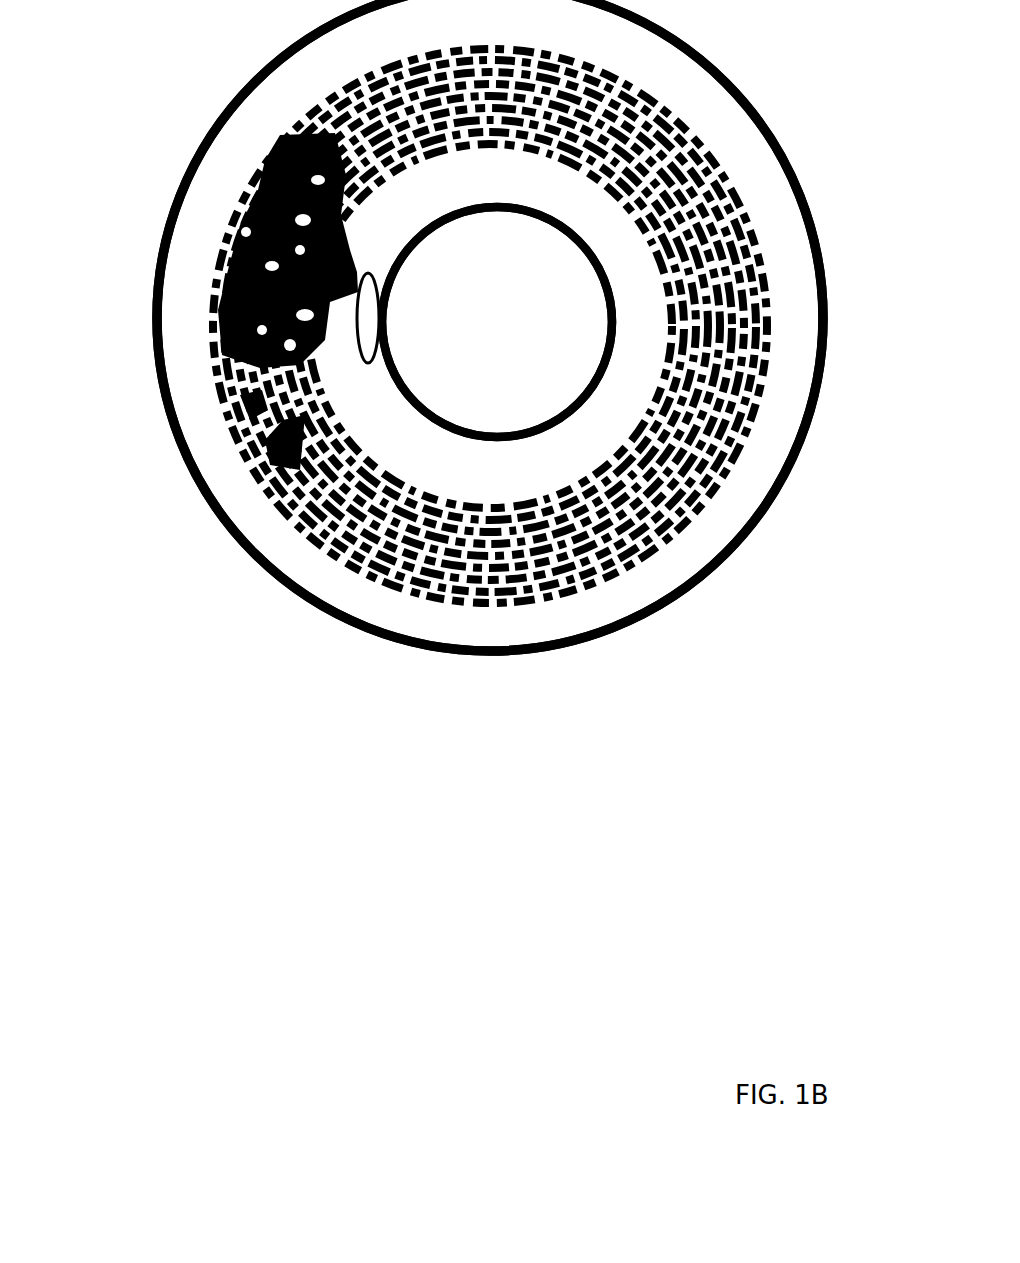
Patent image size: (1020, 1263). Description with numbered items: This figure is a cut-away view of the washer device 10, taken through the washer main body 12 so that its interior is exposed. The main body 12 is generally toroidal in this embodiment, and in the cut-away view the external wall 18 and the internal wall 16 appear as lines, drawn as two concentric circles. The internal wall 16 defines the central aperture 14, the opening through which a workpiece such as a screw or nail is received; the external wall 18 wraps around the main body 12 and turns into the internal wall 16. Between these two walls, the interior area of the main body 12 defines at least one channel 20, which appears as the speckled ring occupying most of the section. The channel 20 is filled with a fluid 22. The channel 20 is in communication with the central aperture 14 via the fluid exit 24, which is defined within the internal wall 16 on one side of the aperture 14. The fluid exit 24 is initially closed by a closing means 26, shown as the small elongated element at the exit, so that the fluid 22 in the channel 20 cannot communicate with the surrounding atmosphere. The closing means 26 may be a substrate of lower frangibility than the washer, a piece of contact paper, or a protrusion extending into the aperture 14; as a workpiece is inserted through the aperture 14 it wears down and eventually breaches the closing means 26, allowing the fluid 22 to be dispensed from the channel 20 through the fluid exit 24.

The device 10 is at (215, 628).
The washer main body 12 is at (503, 623).
The central aperture 14 is at (535, 280).
The internal wall 16 is at (430, 217).
The external main body surface 18 is at (335, 622).
The channel 20 is at (643, 478).
The fluid 22 is at (283, 433).
The fluid exit 24 is at (333, 318).
The closing means 26 is at (372, 310).